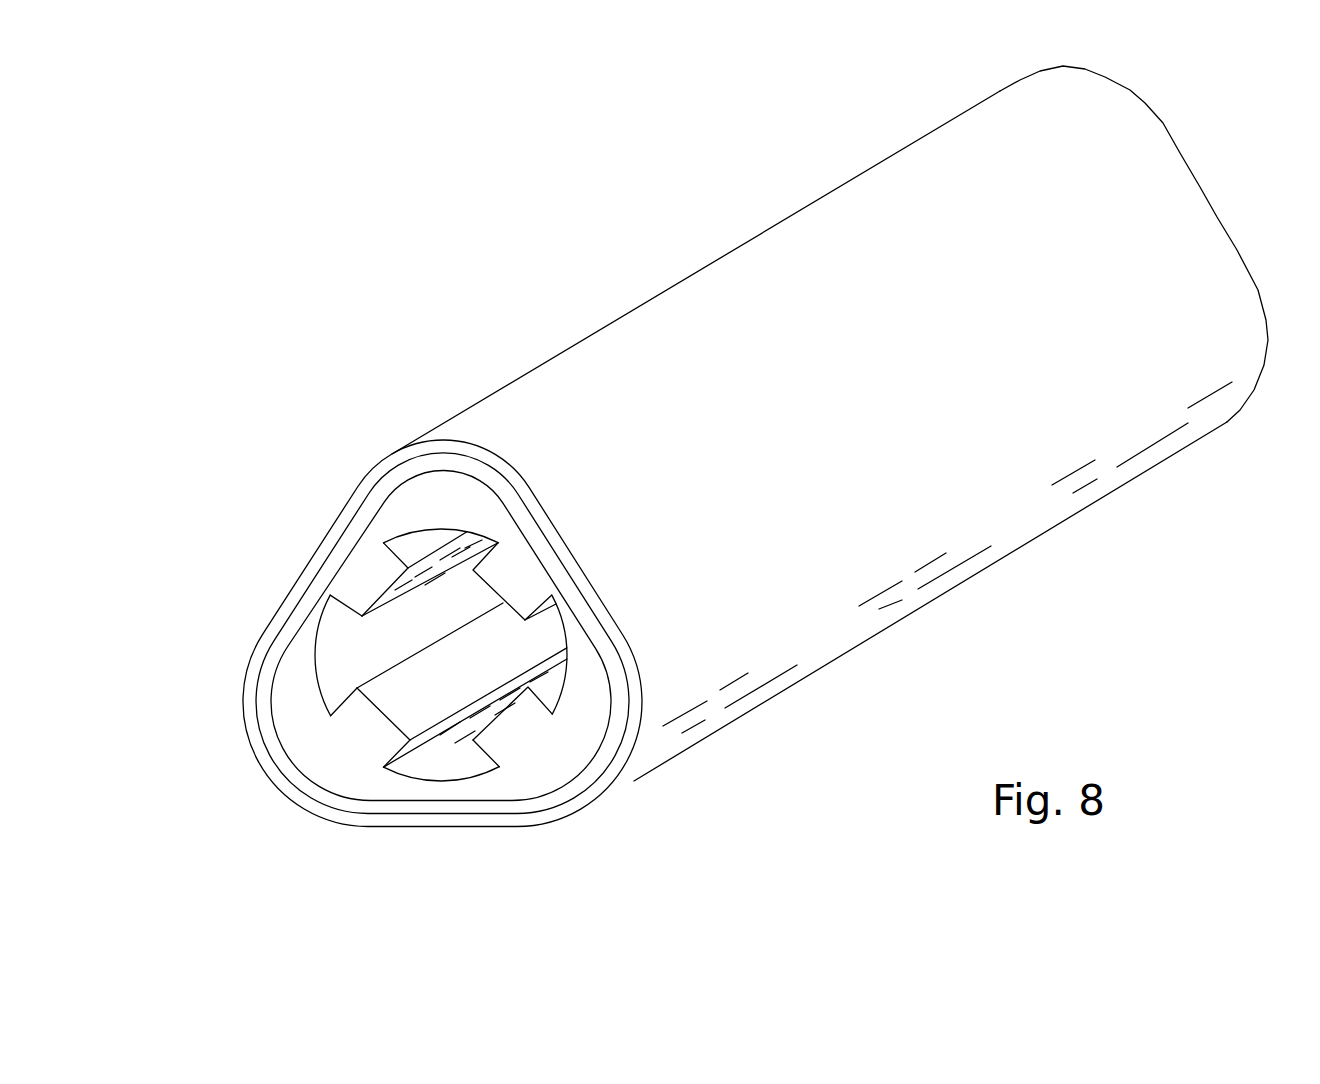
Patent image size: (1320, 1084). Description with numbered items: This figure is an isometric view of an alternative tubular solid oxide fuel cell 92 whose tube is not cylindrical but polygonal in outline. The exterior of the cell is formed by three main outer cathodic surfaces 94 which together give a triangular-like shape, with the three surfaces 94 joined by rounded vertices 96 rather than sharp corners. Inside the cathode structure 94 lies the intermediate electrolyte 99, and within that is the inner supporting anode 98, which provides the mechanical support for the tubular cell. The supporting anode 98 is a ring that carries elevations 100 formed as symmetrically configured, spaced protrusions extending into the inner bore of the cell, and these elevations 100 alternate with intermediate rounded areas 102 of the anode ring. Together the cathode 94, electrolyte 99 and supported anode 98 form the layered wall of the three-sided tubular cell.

The solid oxide fuel cell 92 is at (565, 270).
The outer cathodic surfaces 94 is at (835, 227).
The rounded vertices 96 is at (437, 447).
The inner supporting anode 98 is at (573, 660).
The intermediate electrolyte 99 is at (268, 740).
The elevations 100 is at (512, 738).
The intermediate rounded areas 102 is at (346, 653).